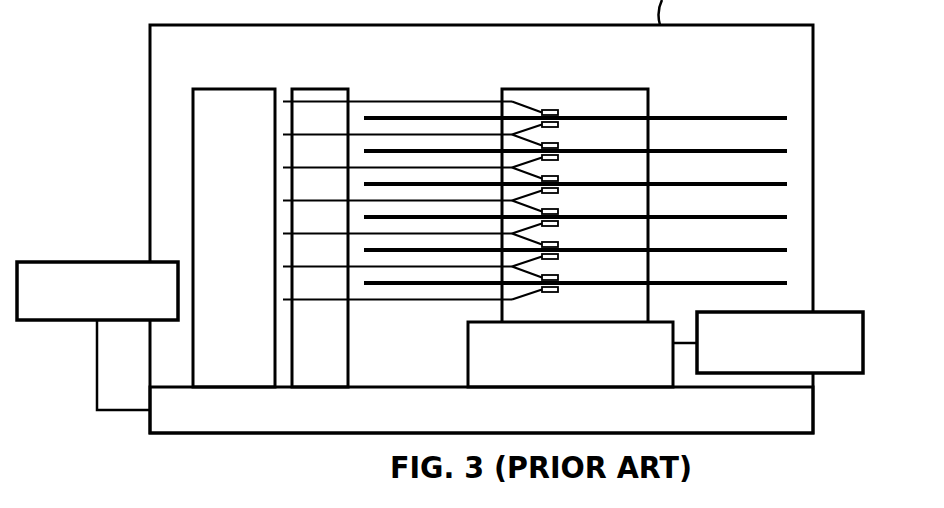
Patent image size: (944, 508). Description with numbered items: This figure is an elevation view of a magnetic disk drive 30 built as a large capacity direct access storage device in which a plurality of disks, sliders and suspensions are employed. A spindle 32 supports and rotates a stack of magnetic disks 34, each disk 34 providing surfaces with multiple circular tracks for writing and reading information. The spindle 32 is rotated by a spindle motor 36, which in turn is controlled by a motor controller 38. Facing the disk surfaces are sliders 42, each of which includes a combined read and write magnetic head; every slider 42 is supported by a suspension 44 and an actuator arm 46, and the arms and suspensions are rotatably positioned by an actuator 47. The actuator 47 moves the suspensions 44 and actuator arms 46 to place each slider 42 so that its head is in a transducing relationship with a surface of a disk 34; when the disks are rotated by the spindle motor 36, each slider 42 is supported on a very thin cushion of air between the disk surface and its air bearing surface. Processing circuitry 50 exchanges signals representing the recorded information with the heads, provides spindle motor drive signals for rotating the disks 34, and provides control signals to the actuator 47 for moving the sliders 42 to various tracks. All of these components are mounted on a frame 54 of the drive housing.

The magnetic disk drive 30 is at (703, 85).
The spindle 32 is at (625, 89).
The magnetic disk 34 is at (762, 121).
The spindle motor 36 is at (592, 367).
The motor controller 38 is at (849, 373).
The slider 42 is at (557, 66).
The suspension 44 is at (527, 68).
The actuator arm 46 is at (452, 135).
The actuator 47 is at (230, 89).
The processing circuitry 50 is at (77, 262).
The frame 54 is at (272, 433).